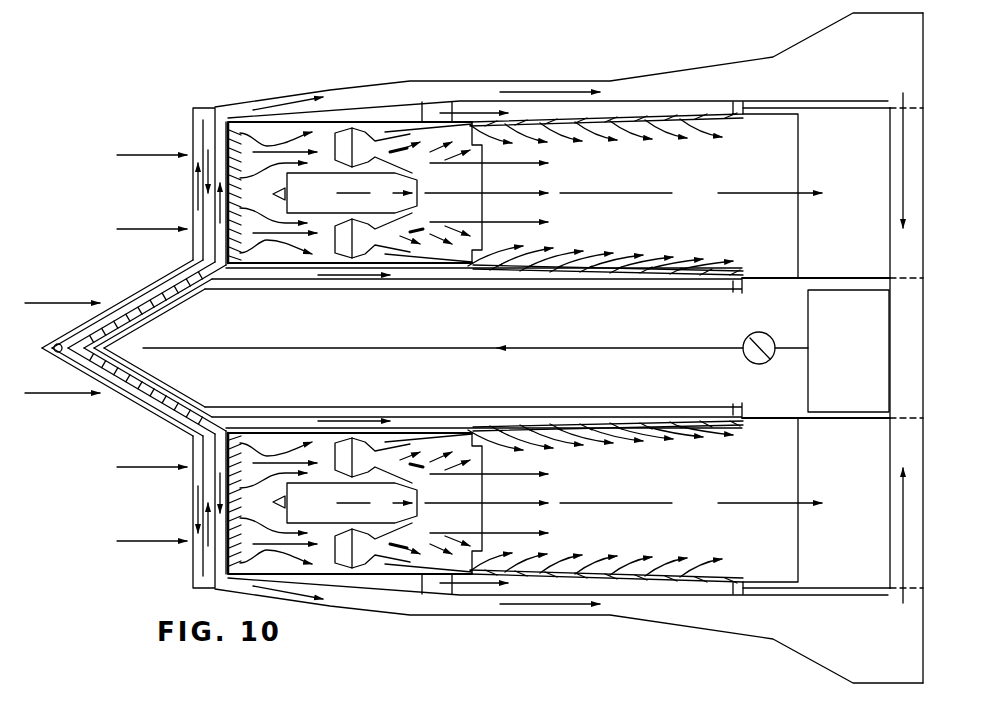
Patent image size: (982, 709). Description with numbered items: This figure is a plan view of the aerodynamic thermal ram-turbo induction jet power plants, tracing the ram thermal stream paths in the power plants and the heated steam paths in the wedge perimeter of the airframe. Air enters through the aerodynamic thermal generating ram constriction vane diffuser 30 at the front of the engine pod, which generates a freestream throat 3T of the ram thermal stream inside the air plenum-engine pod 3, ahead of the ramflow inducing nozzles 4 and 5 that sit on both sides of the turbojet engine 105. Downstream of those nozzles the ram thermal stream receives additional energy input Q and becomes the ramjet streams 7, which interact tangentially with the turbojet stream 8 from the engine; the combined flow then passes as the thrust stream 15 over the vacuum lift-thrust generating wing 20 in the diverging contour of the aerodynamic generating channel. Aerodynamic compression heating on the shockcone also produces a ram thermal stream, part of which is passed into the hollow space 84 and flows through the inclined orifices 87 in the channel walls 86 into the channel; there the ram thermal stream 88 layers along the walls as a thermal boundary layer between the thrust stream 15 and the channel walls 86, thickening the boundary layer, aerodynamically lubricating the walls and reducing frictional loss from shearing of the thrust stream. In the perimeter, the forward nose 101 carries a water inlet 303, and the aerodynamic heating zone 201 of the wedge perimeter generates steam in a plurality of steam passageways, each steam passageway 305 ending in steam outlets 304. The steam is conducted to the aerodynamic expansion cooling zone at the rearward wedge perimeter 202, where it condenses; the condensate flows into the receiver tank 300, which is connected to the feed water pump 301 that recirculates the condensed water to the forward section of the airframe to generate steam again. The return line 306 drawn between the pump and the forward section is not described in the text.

The rearward wedge perimeter 202 is at (763, 65).
The aerodynamic heating zone of the perimeter 201 is at (193, 132).
The steam outlets 304 is at (220, 118).
The aerodynamic thermal generating ram constriction vane diffuser 30 is at (235, 120).
The air plenum-engine pod 3 is at (318, 142).
The freestream throat 3T is at (267, 145).
The ram thermal inducing nozzle 4 is at (342, 143).
The ram thermal inducing nozzle 5 is at (360, 137).
The turbojet engine 105 is at (345, 348).
The turbojet stream 8 is at (374, 348).
The additional energy input Q is at (413, 140).
The ramjet streams 7 is at (414, 347).
The thrust stream 15 is at (623, 348).
The vacuum lift-thrust generating wing 20 is at (775, 155).
The ram thermal stream 88 is at (612, 132).
The inclined orifices 87 is at (600, 282).
The channel walls 86 is at (820, 277).
The hollow space 84 is at (187, 302).
The steam passageway 305 is at (172, 420).
The forward nose 101 is at (42, 352).
The water inlet 303 is at (54, 345).
The return line 306 is at (443, 364).
The feed water pump 301 is at (775, 361).
The receiver tank 300 is at (848, 351).